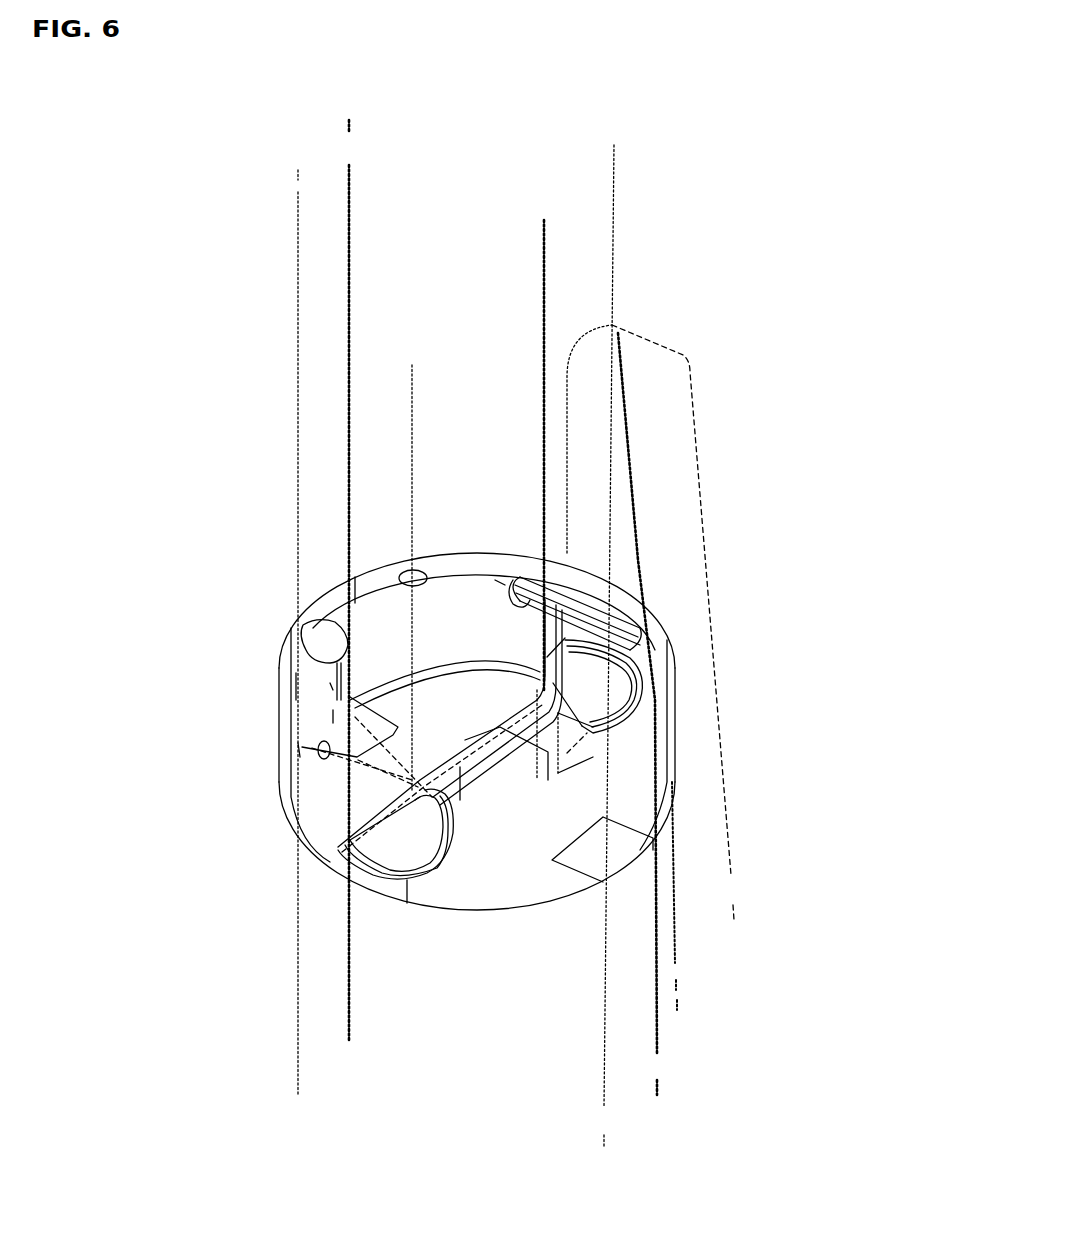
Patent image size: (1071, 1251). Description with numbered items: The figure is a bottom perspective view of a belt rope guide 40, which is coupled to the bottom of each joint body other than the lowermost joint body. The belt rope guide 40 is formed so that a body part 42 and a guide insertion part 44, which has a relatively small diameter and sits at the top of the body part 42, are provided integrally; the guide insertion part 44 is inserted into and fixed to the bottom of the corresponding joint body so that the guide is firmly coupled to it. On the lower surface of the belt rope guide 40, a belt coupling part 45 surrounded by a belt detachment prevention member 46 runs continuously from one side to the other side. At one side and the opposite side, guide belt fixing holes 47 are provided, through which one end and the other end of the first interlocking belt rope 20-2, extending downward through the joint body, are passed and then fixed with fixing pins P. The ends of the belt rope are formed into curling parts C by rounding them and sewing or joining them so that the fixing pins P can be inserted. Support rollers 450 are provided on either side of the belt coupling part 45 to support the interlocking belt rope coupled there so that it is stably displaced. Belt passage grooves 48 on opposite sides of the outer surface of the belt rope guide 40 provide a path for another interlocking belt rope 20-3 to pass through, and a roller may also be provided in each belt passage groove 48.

The first interlocking belt rope 20-2 is at (713, 825).
The interlocking belt rope 20-3 is at (297, 975).
The belt rope guide 40 is at (687, 713).
The body part 42 is at (652, 747).
The guide insertion part 44 is at (455, 573).
The belt coupling part 45 is at (523, 790).
The belt detachment prevention member 46 is at (505, 805).
The guide belt fixing holes 47 is at (628, 595).
The belt passage grooves 48 is at (328, 699).
The support rollers 450 is at (600, 690).
The fixing pins P is at (498, 577).
The curling parts C is at (655, 628).